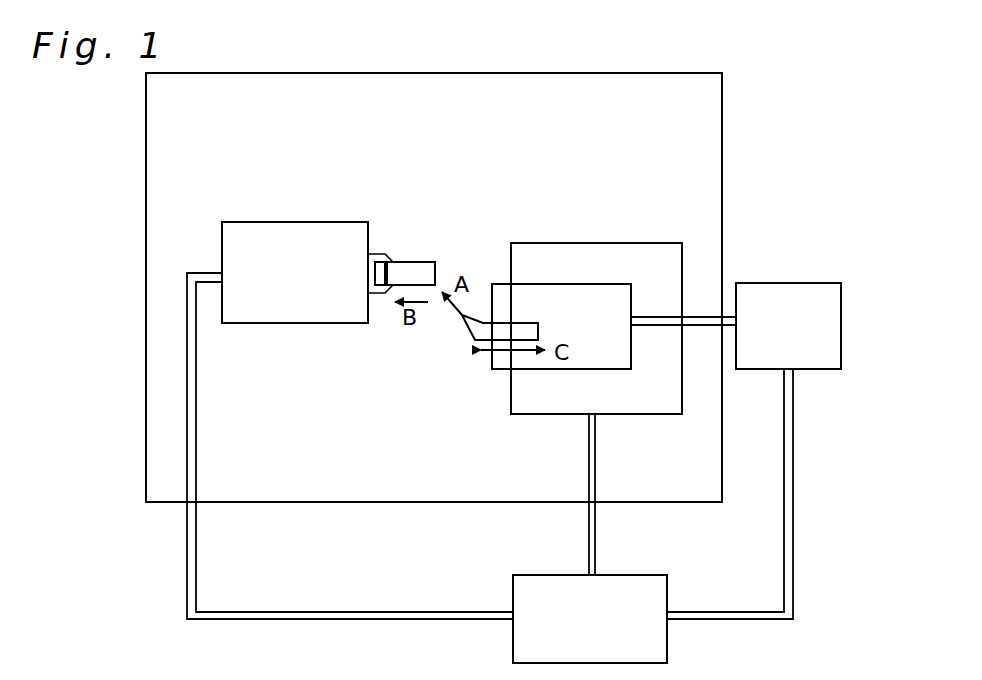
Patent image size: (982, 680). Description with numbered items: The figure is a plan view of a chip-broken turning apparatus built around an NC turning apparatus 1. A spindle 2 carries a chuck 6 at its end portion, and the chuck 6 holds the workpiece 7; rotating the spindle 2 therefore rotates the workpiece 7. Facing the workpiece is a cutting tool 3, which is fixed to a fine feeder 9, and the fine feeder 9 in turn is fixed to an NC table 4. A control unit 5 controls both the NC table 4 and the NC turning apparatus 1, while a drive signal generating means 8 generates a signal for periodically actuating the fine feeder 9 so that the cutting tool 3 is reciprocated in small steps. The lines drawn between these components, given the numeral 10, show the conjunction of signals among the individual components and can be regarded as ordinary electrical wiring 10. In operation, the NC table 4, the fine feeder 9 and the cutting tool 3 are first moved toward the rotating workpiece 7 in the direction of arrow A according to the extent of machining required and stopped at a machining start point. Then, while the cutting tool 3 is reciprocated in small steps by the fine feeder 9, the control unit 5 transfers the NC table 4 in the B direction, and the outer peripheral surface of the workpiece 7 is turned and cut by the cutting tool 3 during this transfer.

The NC turning apparatus 1 is at (175, 247).
The spindle 2 is at (257, 222).
The cutting tool 3 is at (517, 328).
The NC table 4 is at (637, 263).
The control unit 5 is at (667, 597).
The chuck 6 is at (375, 260).
The workpiece 7 is at (420, 270).
The drive signal generating means 8 is at (767, 282).
The fine feeder 9 is at (568, 292).
The electrical wiring 10 is at (430, 610).